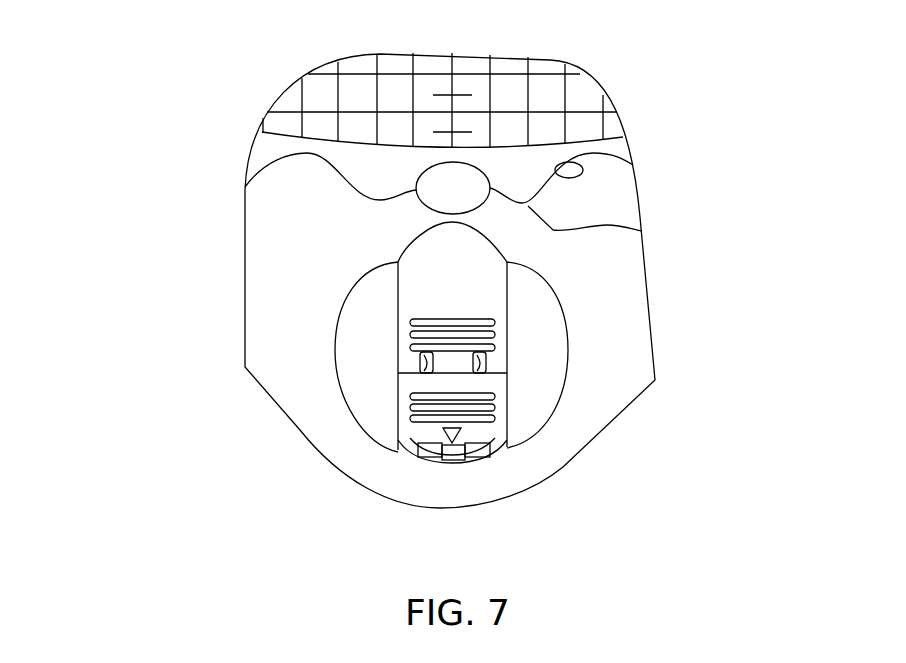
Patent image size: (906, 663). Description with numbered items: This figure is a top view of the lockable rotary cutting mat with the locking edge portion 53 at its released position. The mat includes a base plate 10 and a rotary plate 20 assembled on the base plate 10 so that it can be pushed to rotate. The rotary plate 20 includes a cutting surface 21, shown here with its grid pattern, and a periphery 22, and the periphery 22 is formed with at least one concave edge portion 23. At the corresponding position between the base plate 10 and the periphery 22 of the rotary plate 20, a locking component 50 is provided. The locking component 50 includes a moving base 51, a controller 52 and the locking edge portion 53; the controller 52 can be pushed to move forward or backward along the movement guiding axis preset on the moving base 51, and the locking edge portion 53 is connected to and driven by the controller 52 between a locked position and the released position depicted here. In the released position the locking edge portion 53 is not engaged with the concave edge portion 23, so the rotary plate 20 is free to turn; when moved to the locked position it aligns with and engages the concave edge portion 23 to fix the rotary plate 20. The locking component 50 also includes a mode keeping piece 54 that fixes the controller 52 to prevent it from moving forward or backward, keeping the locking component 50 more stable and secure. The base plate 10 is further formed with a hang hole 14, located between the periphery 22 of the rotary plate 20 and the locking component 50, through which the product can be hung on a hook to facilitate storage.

The base plate 10 is at (637, 424).
The hang hole 14 is at (447, 183).
The rotary plate 20 is at (606, 183).
The cutting surface 21 is at (360, 87).
The periphery 22 is at (640, 230).
The concave edge portion 23 is at (562, 173).
The locking component 50 is at (316, 338).
The moving base 51 is at (365, 285).
The controller 52 is at (403, 337).
The locking edge portion 53 is at (432, 228).
The mode keeping piece 54 is at (407, 403).